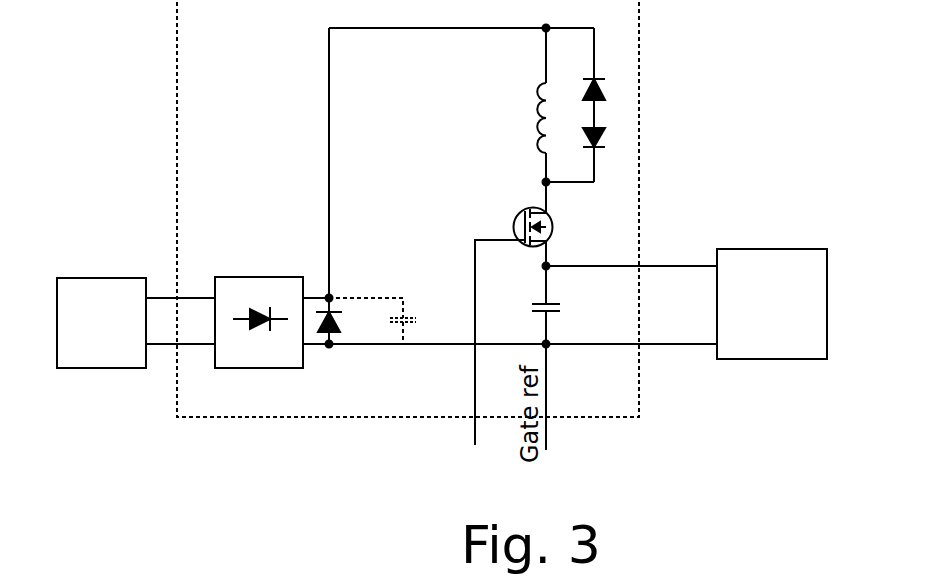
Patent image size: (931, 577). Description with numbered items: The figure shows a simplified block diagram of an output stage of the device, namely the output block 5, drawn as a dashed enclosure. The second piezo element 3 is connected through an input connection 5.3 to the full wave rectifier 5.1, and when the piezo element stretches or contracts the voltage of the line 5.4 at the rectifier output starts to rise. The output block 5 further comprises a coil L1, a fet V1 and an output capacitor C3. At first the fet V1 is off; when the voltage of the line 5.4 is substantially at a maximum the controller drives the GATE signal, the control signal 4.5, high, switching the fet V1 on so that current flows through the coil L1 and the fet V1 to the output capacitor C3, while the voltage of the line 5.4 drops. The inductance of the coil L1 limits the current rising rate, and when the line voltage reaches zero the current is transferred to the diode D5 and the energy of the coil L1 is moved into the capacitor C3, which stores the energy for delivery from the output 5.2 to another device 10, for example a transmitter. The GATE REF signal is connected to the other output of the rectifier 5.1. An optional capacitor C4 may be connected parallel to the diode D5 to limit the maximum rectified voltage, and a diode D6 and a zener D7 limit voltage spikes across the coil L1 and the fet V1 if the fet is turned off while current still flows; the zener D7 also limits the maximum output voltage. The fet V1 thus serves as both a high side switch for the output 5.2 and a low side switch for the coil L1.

The second piezo element 3 is at (90, 368).
The output block 5 is at (236, 418).
The full wave rectifier 5.1 is at (228, 278).
The output 5.2 is at (645, 266).
The input connection from mains 5.3 is at (183, 298).
The line 5.4 is at (329, 104).
The control signal 4.5 is at (475, 428).
The another device 10 is at (767, 249).
The diode D5 is at (347, 319).
The diode D6 is at (607, 75).
The zener D7 is at (607, 153).
The coil L1 is at (520, 105).
The fet V1 is at (556, 224).
The output capacitor C3 is at (562, 357).
The optional capacitor C4 is at (390, 321).